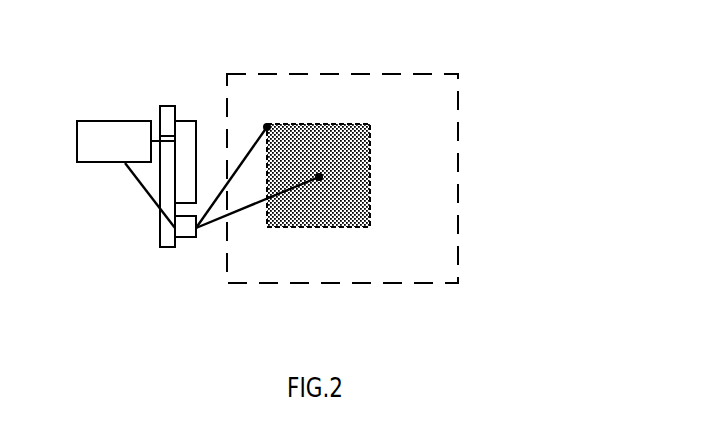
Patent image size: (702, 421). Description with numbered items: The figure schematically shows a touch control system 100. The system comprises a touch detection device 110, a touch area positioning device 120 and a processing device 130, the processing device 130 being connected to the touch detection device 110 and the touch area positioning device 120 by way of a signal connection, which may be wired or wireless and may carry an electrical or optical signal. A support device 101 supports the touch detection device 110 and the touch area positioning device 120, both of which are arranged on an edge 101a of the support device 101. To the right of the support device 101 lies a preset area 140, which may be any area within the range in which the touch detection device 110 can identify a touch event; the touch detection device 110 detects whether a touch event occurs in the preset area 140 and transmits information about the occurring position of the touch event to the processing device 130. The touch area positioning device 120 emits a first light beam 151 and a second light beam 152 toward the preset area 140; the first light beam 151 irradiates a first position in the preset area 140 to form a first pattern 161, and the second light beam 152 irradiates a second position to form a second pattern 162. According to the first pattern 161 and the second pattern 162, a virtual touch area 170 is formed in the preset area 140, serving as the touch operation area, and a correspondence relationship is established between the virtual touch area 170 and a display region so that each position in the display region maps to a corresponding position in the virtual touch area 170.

The touch control system 100 is at (553, 22).
The support device 101 is at (123, 184).
The edge of the support device 101a is at (137, 110).
The touch detection device 110 is at (222, 105).
The touch area positioning device 120 is at (131, 288).
The processing device 130 is at (106, 129).
The preset area 140 is at (390, 217).
The first light beam 151 is at (264, 266).
The second light beam 152 is at (280, 227).
The first pattern 161 is at (357, 138).
The second pattern 162 is at (323, 69).
The virtual touch area 170 is at (368, 294).